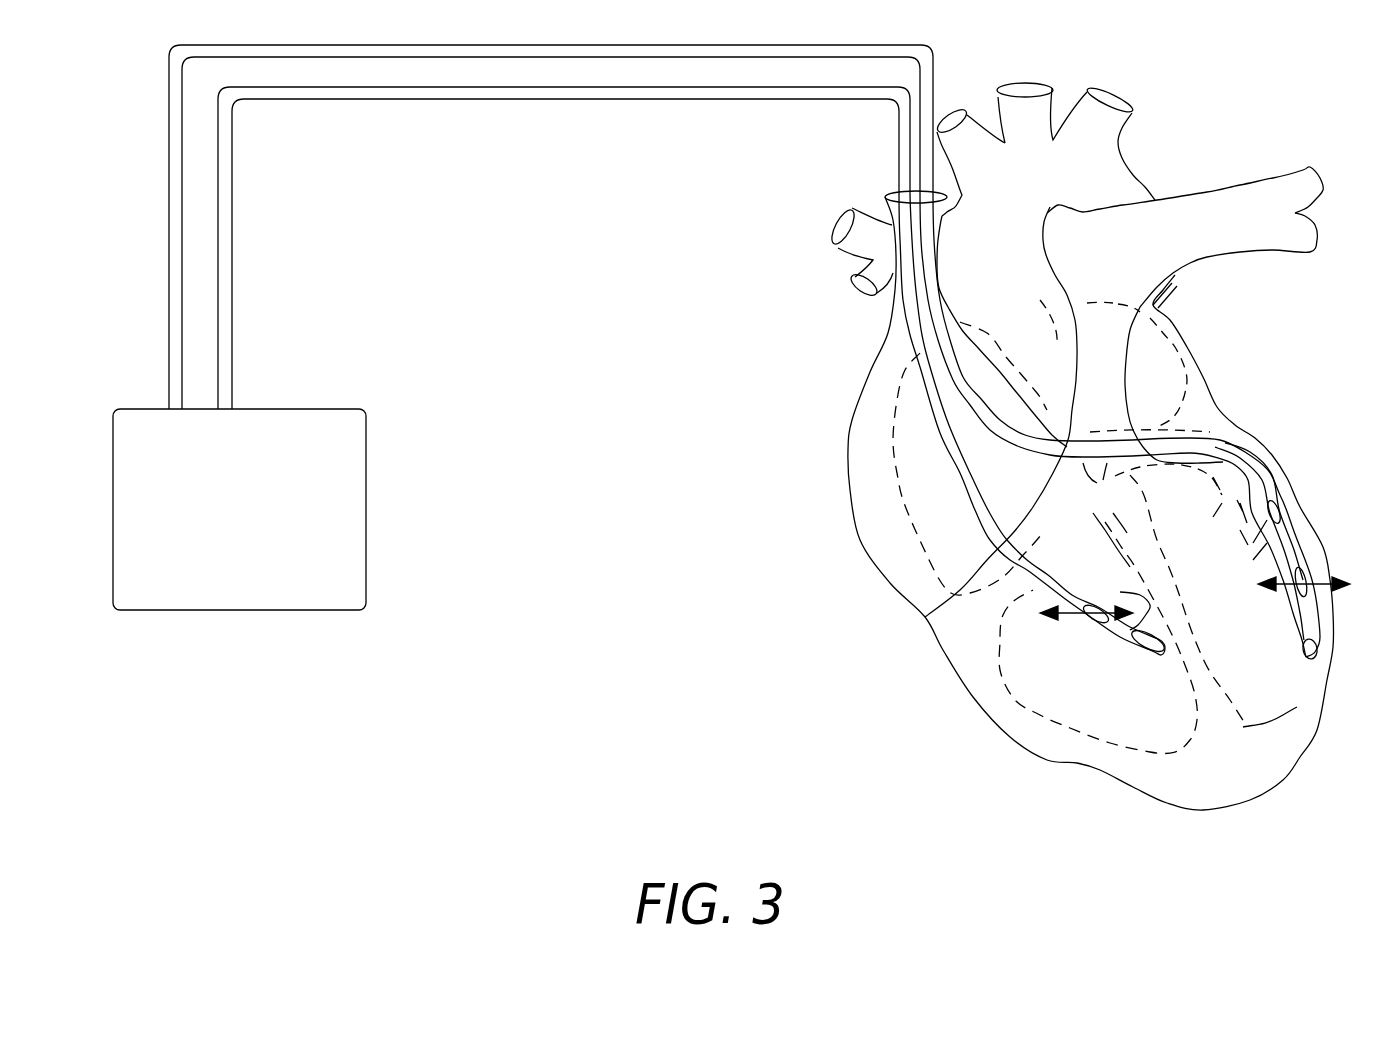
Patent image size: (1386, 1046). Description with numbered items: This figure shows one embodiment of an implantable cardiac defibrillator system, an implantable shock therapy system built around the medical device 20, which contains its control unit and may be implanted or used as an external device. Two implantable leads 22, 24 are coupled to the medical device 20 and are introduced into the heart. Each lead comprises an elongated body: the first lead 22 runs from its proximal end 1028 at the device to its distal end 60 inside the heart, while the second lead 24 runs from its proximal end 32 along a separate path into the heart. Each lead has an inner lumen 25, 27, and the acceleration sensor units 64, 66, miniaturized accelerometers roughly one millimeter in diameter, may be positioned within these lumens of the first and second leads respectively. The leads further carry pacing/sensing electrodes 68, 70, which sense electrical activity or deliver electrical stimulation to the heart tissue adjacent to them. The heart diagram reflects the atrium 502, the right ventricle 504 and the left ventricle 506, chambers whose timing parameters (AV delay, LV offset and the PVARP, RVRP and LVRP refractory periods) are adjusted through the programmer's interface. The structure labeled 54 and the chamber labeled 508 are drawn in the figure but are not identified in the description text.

The medical device 20 is at (343, 409).
The implantable lead 22 is at (692, 388).
The implantable lead 24 is at (733, 364).
The inner lumen 25 is at (175, 157).
The inner lumen 27 is at (223, 158).
The proximal end 32 is at (223, 358).
The proximal end 1028 is at (178, 358).
The heart 54 is at (1077, 763).
The distal end 60 is at (1163, 663).
The acceleration sensor unit 64 is at (1335, 662).
The acceleration sensor unit 66 is at (1280, 513).
The pacing/sensing electrode 68 is at (1088, 607).
The pacing/sensing electrode 70 is at (1312, 595).
The atrium 502 is at (910, 522).
The right ventricle 504 is at (918, 673).
The left ventricle 506 is at (1297, 707).
The left atrium 508 is at (1152, 323).